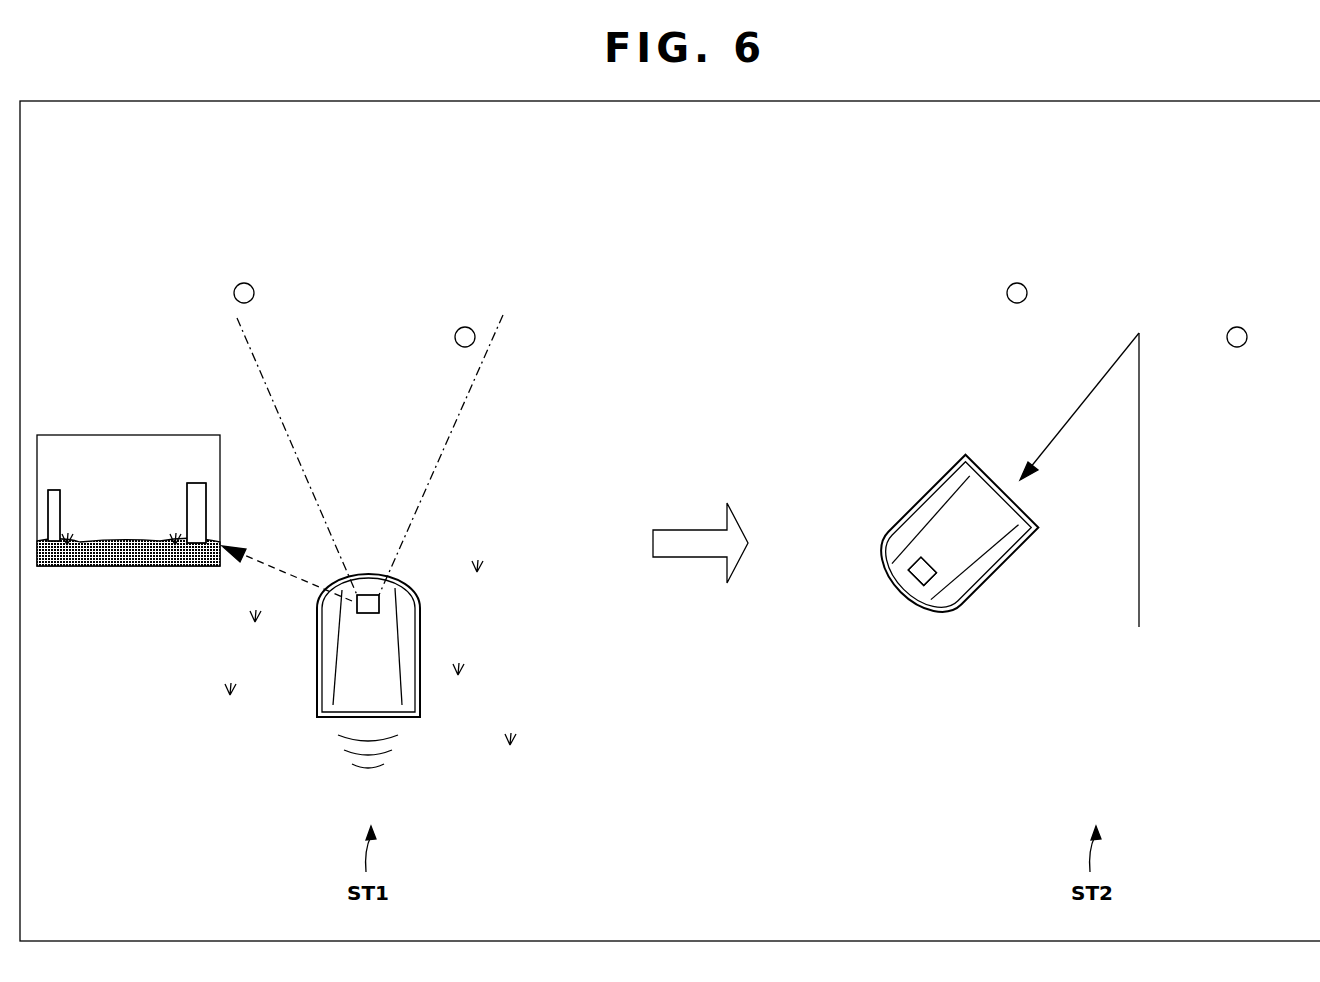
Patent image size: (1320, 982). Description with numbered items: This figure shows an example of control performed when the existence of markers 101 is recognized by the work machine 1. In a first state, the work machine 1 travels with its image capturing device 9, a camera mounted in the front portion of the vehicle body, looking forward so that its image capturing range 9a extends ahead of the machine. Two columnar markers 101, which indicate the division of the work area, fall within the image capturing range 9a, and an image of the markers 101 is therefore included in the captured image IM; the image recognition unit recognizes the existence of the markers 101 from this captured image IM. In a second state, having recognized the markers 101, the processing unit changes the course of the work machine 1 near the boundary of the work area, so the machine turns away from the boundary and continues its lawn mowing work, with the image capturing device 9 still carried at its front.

The work machine 1 is at (323, 718).
The image capturing device 9 is at (368, 615).
The image capturing range 9a is at (478, 372).
The marker 101 is at (54, 490).
The captured image IM is at (126, 435).